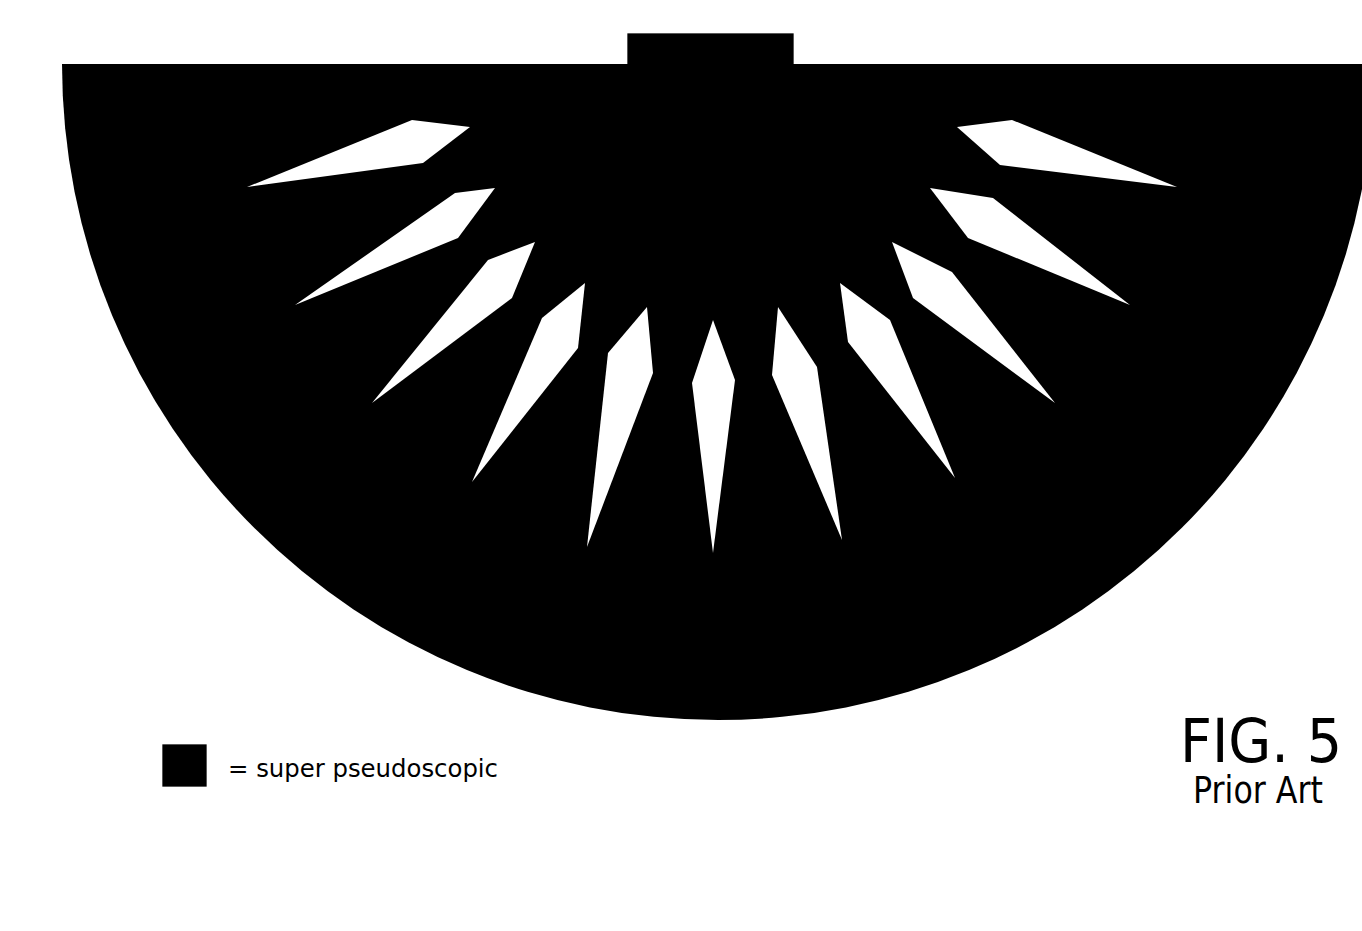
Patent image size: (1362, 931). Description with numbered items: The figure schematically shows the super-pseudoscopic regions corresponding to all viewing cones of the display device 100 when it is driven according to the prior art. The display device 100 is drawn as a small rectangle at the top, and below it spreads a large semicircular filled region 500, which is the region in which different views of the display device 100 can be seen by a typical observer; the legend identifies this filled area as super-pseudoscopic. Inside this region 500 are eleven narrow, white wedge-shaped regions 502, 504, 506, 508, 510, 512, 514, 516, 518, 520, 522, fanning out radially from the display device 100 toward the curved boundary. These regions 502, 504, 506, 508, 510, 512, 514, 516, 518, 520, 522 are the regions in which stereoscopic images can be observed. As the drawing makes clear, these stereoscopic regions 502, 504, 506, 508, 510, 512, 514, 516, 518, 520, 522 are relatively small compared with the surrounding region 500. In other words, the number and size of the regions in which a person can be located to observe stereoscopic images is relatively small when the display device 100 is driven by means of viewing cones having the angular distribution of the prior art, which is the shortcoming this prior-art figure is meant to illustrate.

The display device 100 is at (782, 45).
The region 500 is at (1012, 650).
The region 502 is at (358, 153).
The region 504 is at (395, 246).
The region 506 is at (453, 322).
The region 508 is at (528, 382).
The region 510 is at (620, 427).
The region 512 is at (712, 436).
The region 514 is at (807, 423).
The region 516 is at (897, 380).
The region 518 is at (973, 322).
The region 520 is at (1030, 246).
The region 522 is at (1067, 153).